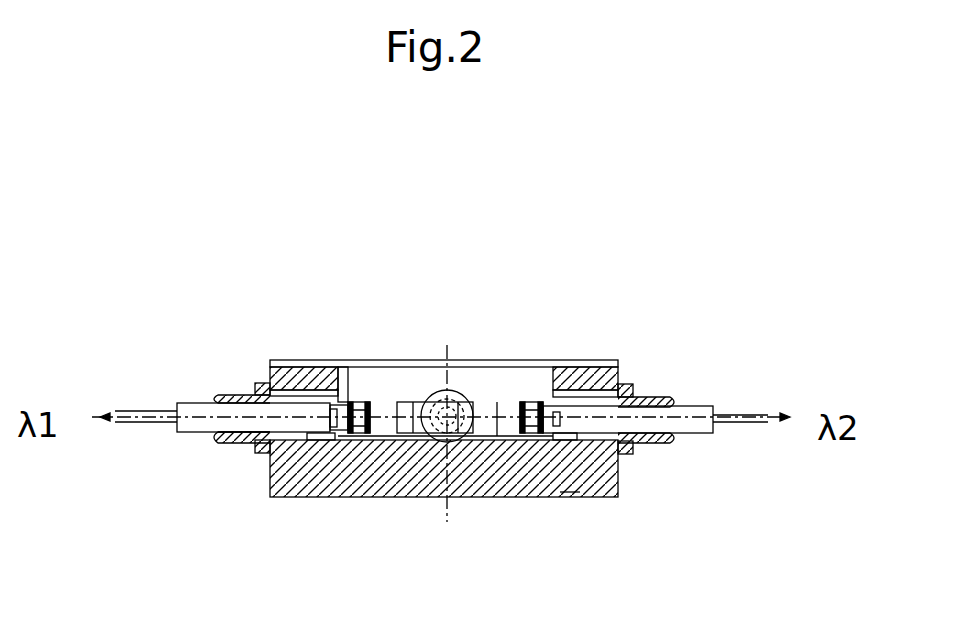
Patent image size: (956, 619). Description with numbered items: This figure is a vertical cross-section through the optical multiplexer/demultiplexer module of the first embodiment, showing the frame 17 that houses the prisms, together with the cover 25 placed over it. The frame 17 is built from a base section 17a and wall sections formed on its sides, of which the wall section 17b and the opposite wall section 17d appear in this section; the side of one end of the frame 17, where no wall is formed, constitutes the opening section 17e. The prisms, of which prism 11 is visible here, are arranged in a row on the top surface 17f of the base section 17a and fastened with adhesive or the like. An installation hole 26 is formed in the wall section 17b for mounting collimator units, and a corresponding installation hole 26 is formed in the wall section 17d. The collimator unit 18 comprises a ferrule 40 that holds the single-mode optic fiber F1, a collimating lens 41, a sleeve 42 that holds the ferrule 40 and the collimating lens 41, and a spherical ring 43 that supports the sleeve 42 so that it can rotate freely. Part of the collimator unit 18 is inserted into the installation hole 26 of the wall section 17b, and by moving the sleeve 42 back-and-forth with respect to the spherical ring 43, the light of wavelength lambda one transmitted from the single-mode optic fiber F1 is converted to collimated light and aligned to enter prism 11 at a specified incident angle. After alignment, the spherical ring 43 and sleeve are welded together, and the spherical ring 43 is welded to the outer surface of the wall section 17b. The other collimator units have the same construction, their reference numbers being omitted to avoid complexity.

The frame 17 is at (308, 499).
The base section 17a is at (567, 490).
The wall section 17b is at (287, 378).
The wall section 17d is at (617, 380).
The opening section 17e is at (343, 380).
The top surface 17f is at (497, 430).
The cover 25 is at (574, 361).
The prism 11 is at (403, 400).
The collimating lens 41 is at (352, 400).
The ferrule 40 is at (197, 420).
The sleeve 42 is at (240, 437).
The spherical ring 43 is at (262, 383).
The collimator unit 18 is at (243, 436).
The installation hole 26 is at (290, 434).
The single-mode optic fiber F1 is at (132, 420).